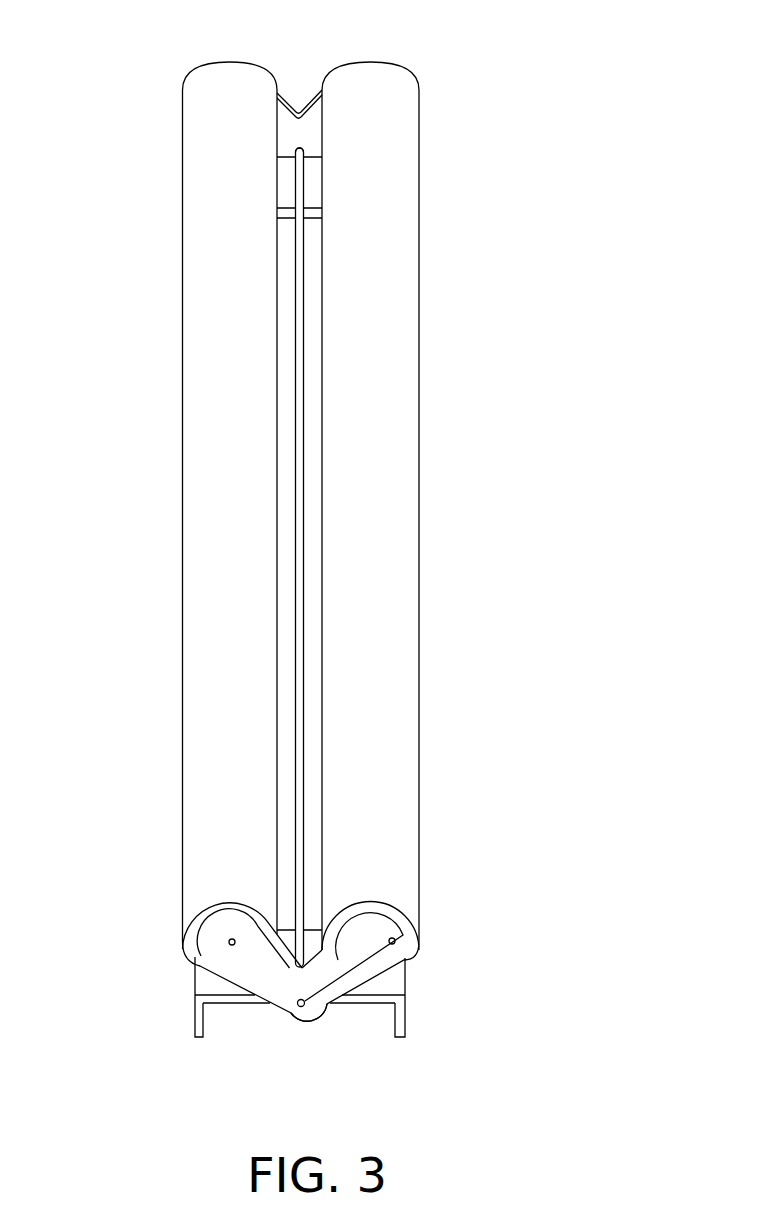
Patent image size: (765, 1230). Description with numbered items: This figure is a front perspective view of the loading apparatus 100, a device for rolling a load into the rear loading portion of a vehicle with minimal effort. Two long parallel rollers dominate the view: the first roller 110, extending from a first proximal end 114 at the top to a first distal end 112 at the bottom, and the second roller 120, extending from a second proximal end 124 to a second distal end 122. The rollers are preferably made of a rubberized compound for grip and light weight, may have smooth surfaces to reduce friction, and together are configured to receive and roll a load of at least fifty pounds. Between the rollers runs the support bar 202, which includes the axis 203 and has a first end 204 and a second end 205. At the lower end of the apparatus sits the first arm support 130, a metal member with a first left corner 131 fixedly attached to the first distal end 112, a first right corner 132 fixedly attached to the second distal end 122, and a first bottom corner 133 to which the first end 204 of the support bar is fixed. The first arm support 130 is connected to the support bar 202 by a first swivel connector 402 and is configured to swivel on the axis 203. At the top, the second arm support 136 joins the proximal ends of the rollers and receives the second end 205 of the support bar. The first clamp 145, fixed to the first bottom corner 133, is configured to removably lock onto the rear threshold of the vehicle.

The loading apparatus 100 is at (606, 100).
The first roller 110 is at (243, 546).
The first distal end 112 is at (226, 899).
The first proximal end 114 is at (225, 110).
The second roller 120 is at (383, 545).
The second distal end 122 is at (393, 896).
The second proximal end 124 is at (388, 112).
The first arm support 130 is at (409, 1004).
The first left corner 131 is at (229, 940).
The first right corner 132 is at (396, 944).
The first bottom corner 133 is at (303, 1023).
The second arm support 136 is at (287, 137).
The first clamp 145 is at (214, 985).
The support bar 202 is at (304, 275).
The axis 203 is at (311, 323).
The first end 204 is at (346, 977).
The second end 205 is at (302, 176).
The first swivel connector 402 is at (304, 1006).